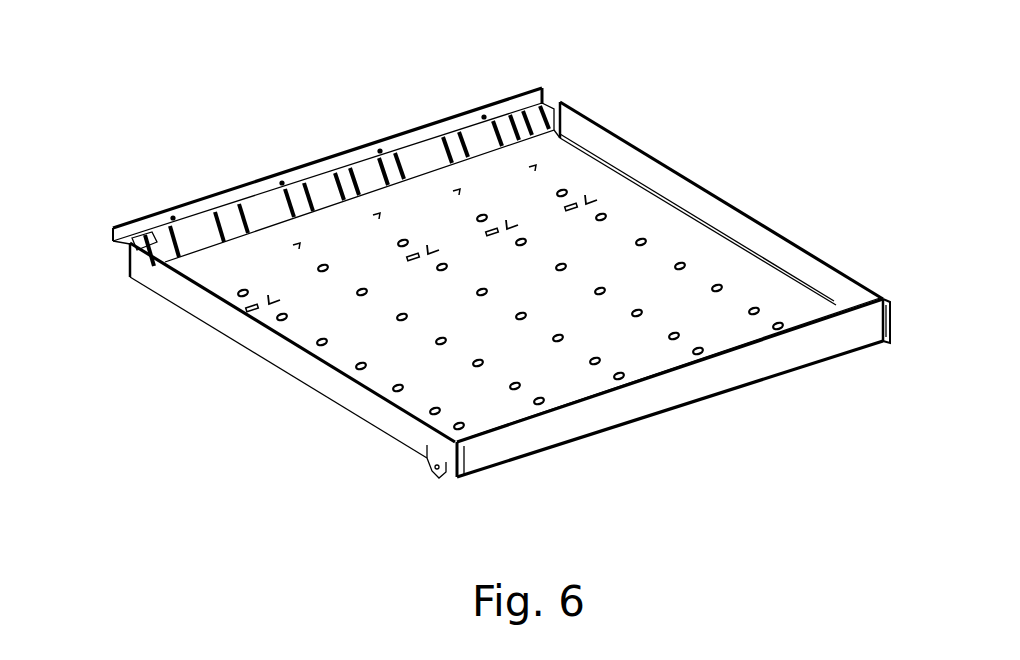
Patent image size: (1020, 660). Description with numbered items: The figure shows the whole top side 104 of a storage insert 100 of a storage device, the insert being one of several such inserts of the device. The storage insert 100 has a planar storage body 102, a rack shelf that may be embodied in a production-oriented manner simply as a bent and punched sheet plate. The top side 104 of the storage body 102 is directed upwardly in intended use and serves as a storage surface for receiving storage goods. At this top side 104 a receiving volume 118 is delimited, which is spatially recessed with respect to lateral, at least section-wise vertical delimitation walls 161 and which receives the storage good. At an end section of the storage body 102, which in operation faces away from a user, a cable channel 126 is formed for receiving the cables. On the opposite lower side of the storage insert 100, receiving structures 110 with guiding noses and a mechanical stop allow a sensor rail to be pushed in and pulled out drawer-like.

The storage insert 100 is at (464, 304).
The storage body 102 is at (672, 196).
The top side 104 is at (592, 370).
The receiving structures 110 is at (222, 269).
The receiving volume 118 is at (742, 280).
The cable channel 126 is at (122, 260).
The delimitation walls 161 is at (633, 312).